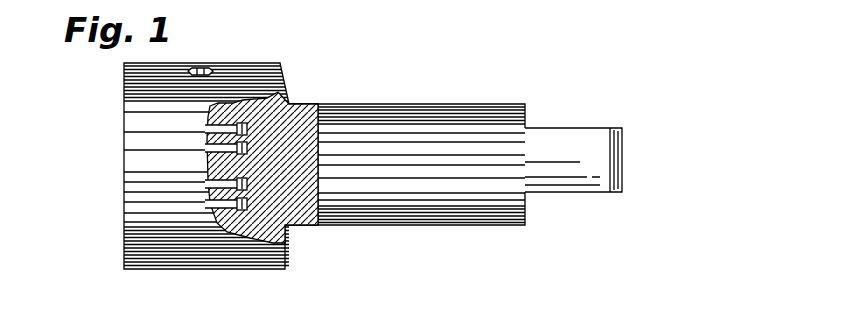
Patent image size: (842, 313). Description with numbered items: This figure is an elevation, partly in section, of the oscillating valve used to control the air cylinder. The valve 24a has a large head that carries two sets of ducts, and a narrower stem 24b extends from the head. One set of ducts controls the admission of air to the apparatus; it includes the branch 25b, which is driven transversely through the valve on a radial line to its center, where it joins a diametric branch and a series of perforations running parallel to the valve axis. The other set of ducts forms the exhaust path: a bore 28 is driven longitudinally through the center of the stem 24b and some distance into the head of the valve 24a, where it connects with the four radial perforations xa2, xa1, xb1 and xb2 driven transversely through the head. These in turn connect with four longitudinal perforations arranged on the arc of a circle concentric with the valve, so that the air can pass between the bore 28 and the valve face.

The valve 24a is at (268, 270).
The stem 24b is at (476, 222).
The branch 25b is at (197, 66).
The bore 28 is at (318, 160).
The perforation xa1 is at (209, 150).
The perforation xa2 is at (209, 129).
The perforation xb1 is at (208, 183).
The perforation xb2 is at (208, 202).